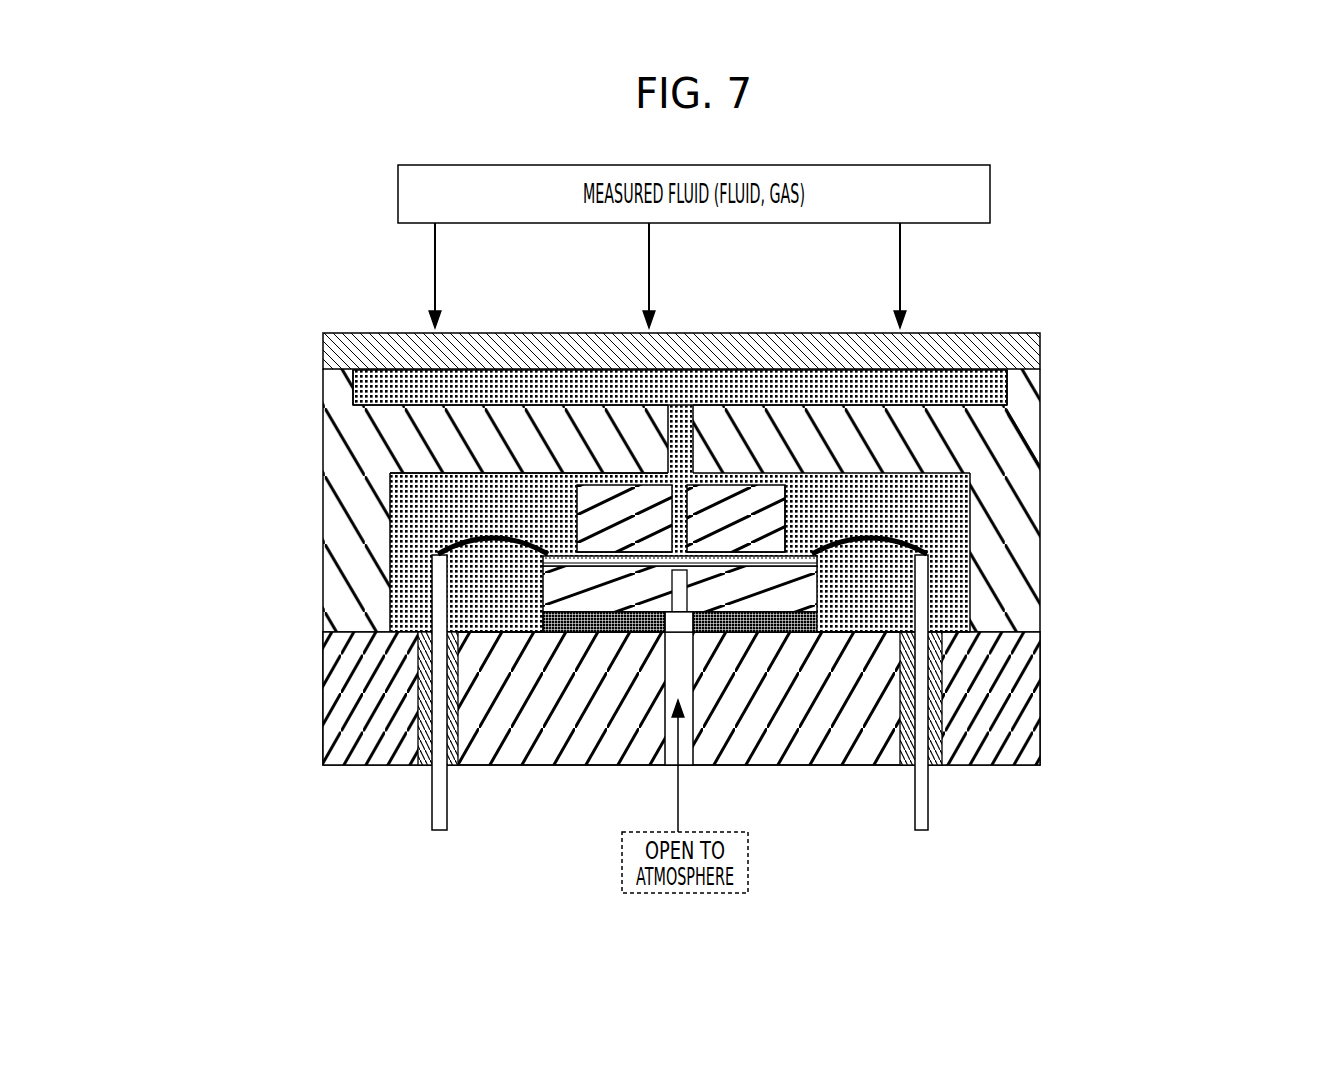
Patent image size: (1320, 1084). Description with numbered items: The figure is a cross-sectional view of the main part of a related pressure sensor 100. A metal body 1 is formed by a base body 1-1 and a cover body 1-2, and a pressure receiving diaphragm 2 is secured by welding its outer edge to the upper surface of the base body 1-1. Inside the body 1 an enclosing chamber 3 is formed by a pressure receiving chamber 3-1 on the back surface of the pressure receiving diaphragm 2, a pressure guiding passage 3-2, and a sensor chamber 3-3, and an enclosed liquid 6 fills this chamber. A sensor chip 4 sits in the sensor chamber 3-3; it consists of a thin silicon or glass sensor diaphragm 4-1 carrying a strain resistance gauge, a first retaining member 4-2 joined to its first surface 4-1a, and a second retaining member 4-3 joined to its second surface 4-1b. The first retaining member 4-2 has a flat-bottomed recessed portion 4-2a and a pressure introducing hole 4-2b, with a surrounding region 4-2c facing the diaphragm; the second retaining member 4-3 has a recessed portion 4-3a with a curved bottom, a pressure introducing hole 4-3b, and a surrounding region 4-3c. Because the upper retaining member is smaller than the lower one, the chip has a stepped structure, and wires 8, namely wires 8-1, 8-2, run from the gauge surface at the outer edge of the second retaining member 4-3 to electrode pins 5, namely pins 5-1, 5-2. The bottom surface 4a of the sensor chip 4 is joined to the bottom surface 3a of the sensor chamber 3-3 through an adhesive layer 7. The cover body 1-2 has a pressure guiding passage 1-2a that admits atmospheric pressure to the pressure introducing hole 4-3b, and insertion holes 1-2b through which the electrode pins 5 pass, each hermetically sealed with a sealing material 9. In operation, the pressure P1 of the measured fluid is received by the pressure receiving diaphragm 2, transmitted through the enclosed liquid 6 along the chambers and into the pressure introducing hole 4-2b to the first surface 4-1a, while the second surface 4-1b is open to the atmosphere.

The pressure sensor 100 is at (1025, 252).
The body 1 is at (686, 585).
The base body 1-1 is at (347, 474).
The cover body 1-2 is at (672, 728).
The pressure guiding passage 1-2a is at (687, 743).
The insertion holes 1-2b is at (417, 710).
The pressure receiving diaphragm 2 is at (1037, 331).
The enclosing chamber 3 is at (780, 501).
The pressure receiving chamber 3-1 is at (993, 392).
The pressure guiding passage 3-2 is at (687, 443).
The sensor chamber 3-3 is at (963, 490).
The bottom surface of the sensor chamber 3a is at (500, 628).
The sensor chip 4 is at (851, 592).
The sensor diaphragm 4-1 is at (864, 570).
The first surface of the sensor diaphragm 4-1a is at (672, 556).
The second surface of the sensor diaphragm 4-1b is at (630, 608).
The first retaining member 4-2 is at (783, 507).
The recessed portion of the first retaining member 4-2a is at (760, 562).
The pressure introducing hole of the first retaining member 4-2b is at (800, 560).
The surrounding region of the recessed portion of the first retaining member 4-2c is at (612, 550).
The second retaining member 4-3 is at (810, 612).
The recessed portion of the second retaining member 4-3a is at (690, 585).
The pressure introducing hole of the second retaining member 4-3b is at (705, 625).
The surrounding region of the recessed portion of the second retaining member 4-3c is at (545, 625).
The bottom surface of the sensor chip 4a is at (867, 633).
The electrode pins 5 is at (682, 718).
The electrode pin 5-1 is at (432, 812).
The electrode pin 5-2 is at (922, 810).
The enclosed liquid 6 is at (448, 483).
The adhesive layer 7 is at (640, 628).
The wires 8 is at (706, 416).
The wire 8-1 is at (473, 540).
The wire 8-2 is at (903, 537).
The sealing material 9 is at (420, 743).
The pressure of the measured fluid P1 is at (668, 275).